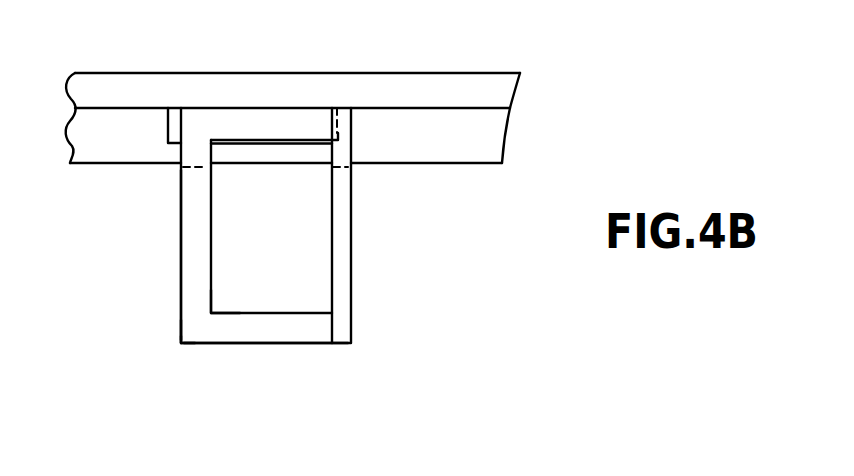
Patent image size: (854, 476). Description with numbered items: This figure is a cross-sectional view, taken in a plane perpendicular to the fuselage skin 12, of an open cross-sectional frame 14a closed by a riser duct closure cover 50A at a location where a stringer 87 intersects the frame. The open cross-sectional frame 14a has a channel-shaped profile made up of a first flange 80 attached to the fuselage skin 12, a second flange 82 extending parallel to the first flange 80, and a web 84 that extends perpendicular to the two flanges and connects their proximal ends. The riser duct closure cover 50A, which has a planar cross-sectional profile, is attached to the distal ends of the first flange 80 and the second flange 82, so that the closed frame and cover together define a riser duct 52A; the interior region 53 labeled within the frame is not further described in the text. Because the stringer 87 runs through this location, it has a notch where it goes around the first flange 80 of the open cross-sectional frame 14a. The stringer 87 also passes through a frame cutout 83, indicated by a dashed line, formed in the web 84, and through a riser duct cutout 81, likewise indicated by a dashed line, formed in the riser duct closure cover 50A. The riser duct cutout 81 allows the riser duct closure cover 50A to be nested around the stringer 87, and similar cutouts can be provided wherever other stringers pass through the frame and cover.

The fuselage skin 12 is at (405, 73).
The stringer 87 is at (93, 175).
The first flange 80 is at (263, 123).
The riser duct closure cover 50A is at (338, 271).
The web 84 is at (195, 276).
The second flange 82 is at (260, 334).
The cavity 53 is at (212, 308).
The frame cutout 83 is at (199, 168).
The riser duct cutout 81 is at (337, 167).
The open cross-sectional frame 14a is at (170, 334).
The riser duct 52A is at (186, 372).